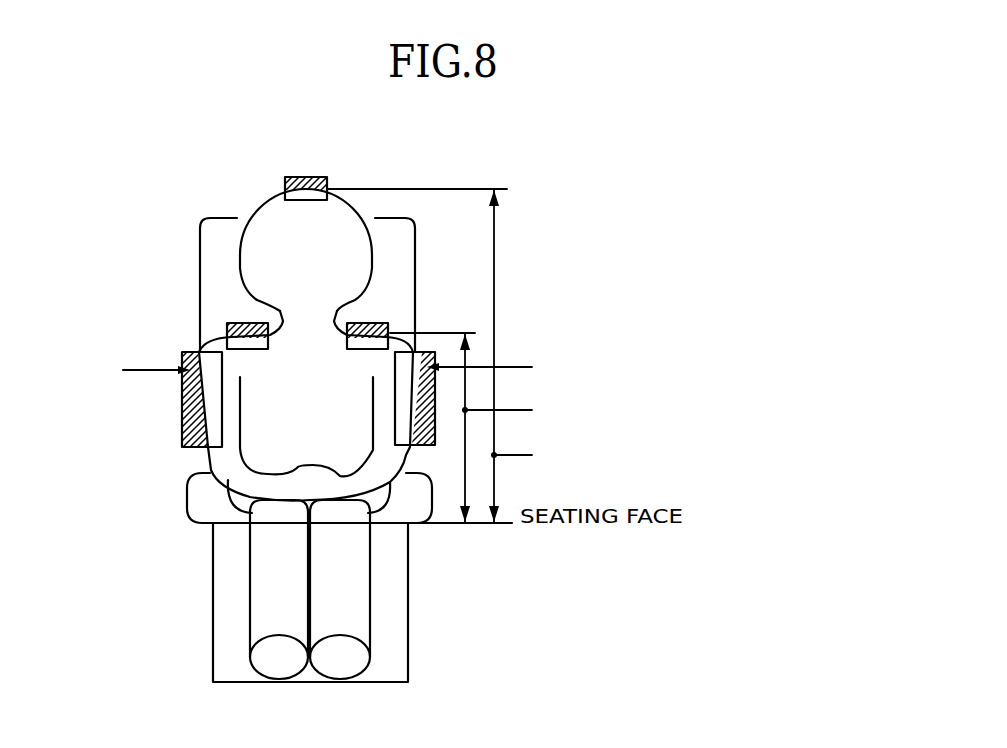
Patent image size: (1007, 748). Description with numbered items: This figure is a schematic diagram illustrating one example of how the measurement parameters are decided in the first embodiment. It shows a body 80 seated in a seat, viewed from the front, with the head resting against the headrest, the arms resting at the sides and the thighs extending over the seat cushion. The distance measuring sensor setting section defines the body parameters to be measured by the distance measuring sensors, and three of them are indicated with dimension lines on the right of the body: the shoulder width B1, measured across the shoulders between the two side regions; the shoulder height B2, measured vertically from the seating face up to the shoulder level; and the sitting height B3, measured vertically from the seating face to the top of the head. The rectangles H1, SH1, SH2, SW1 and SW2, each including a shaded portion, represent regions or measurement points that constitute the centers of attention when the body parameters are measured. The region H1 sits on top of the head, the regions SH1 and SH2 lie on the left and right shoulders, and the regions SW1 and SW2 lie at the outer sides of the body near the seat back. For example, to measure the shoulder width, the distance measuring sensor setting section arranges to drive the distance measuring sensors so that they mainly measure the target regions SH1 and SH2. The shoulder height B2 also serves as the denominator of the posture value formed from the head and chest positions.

The body 80 is at (263, 209).
The head measurement region H1 is at (306, 176).
The first shoulder measurement region SH1 is at (228, 323).
The second shoulder measurement region SH2 is at (388, 323).
The first side measurement region SW1 is at (182, 405).
The second side measurement region SW2 is at (435, 430).
The shoulder width B1 is at (602, 365).
The shoulder height B2 is at (589, 428).
The sitting height B3 is at (541, 356).